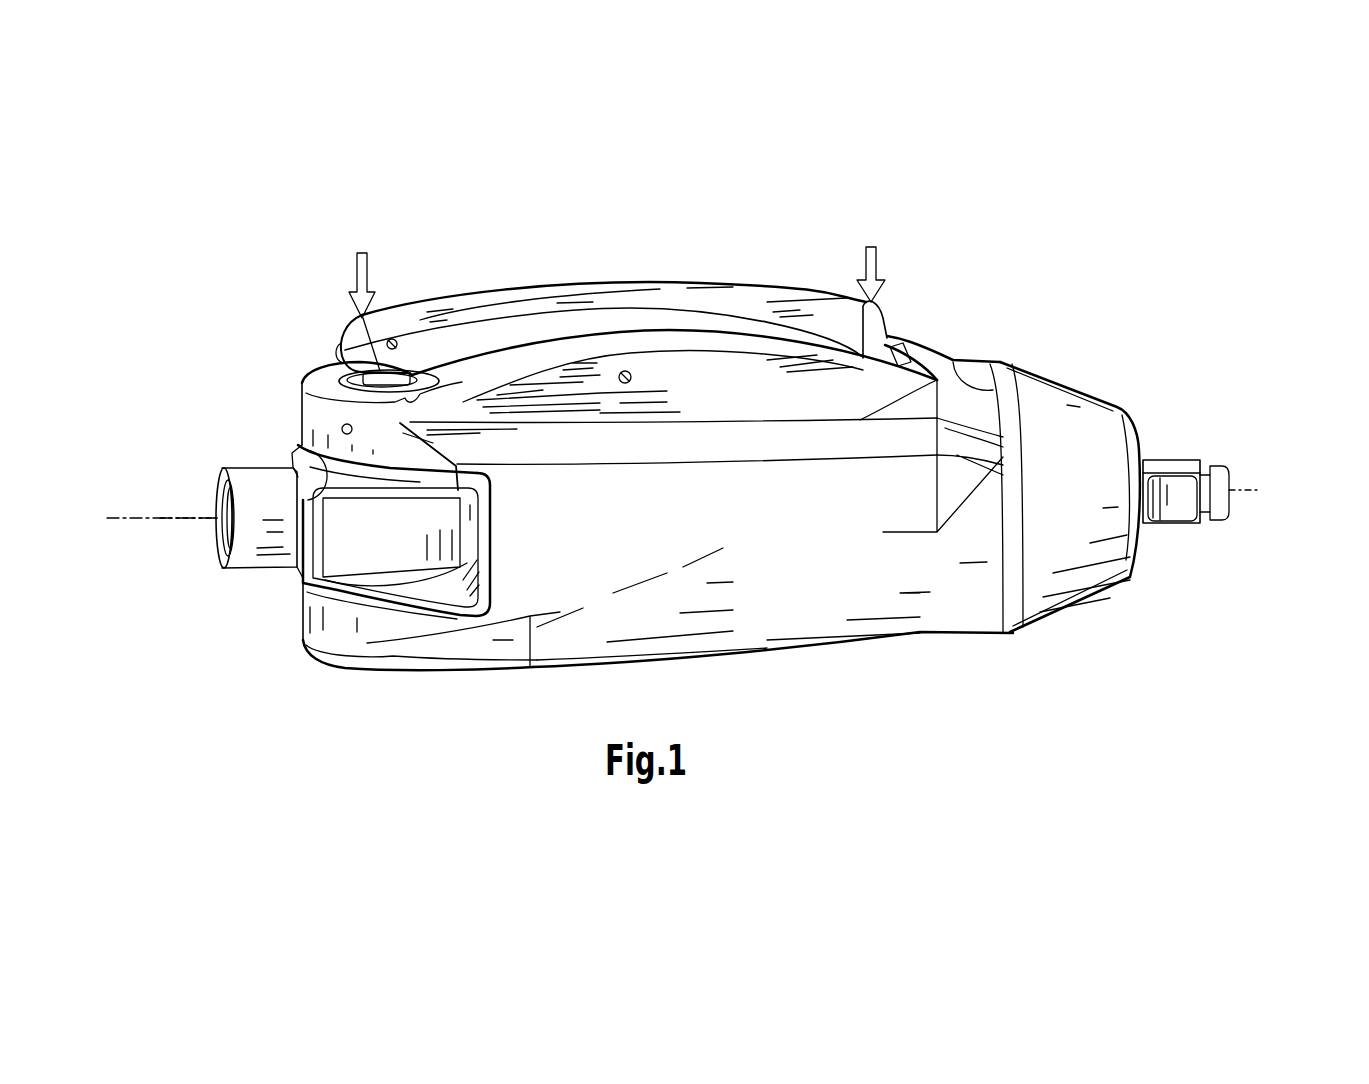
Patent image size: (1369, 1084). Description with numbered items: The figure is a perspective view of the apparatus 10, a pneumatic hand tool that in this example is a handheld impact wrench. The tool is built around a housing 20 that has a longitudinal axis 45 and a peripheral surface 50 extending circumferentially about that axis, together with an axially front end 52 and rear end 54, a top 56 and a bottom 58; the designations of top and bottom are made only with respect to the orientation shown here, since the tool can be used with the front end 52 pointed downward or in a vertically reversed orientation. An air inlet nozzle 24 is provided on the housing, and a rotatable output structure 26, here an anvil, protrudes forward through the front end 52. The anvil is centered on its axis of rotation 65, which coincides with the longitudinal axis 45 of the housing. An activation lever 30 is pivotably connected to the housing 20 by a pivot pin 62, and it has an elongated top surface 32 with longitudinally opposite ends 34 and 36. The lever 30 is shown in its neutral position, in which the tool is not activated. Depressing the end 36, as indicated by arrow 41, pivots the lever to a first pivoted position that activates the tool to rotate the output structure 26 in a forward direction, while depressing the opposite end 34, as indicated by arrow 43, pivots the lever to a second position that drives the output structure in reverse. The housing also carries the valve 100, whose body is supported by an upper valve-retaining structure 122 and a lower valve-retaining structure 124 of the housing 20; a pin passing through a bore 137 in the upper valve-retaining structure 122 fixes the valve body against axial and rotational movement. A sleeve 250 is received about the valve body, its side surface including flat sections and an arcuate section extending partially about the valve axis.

The apparatus 10 is at (1160, 344).
The housing 20 is at (1033, 368).
The air inlet nozzle 24 is at (258, 466).
The rotatable output structure 26 is at (1178, 463).
The activation lever 30 is at (697, 279).
The elongated top surface 32 is at (548, 283).
The end 34 is at (878, 308).
The end 36 is at (357, 316).
The arrow 41 is at (367, 262).
The arrow 43 is at (877, 255).
The longitudinal axis 45 is at (178, 517).
The peripheral surface 50 is at (981, 362).
The front end 52 is at (1135, 433).
The rear end 54 is at (302, 382).
The top 56 is at (913, 343).
The bottom 58 is at (903, 645).
The pivot pin 62 is at (632, 378).
The axis of rotation 65 is at (121, 517).
The valve 100 is at (343, 362).
The upper valve-retaining structure 122 is at (300, 417).
The lower valve-retaining structure 124 is at (303, 604).
The bore 137 is at (347, 434).
The sleeve 250 is at (393, 552).